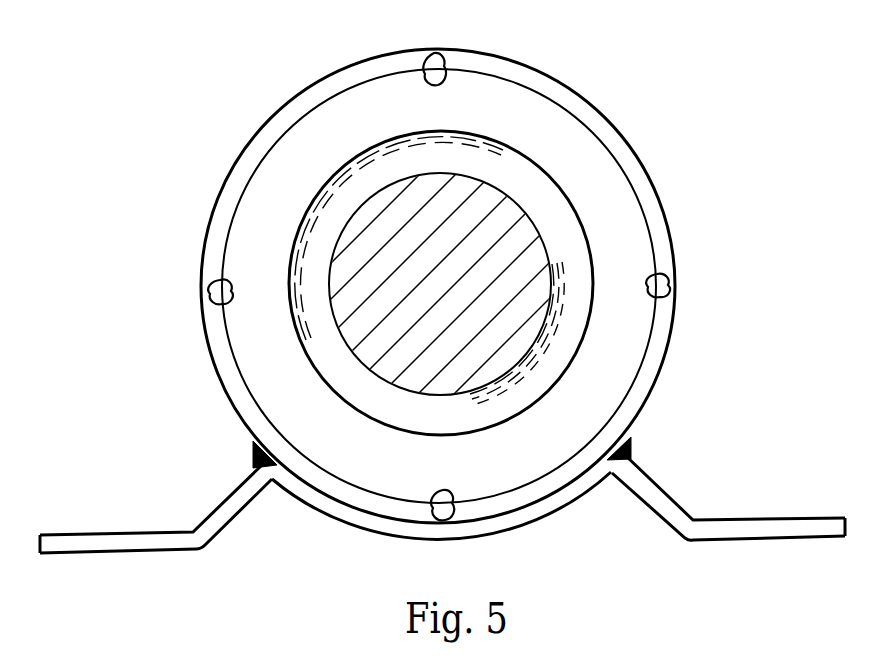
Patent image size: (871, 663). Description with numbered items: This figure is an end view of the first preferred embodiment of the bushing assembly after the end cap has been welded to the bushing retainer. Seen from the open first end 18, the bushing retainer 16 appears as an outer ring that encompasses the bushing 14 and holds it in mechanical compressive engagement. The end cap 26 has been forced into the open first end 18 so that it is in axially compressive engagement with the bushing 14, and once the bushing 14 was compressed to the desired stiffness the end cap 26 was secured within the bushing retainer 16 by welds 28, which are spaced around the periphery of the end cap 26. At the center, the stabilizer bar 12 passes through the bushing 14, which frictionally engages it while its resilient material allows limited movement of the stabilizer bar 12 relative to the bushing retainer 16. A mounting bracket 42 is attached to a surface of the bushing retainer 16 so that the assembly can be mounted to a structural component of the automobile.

The stabilizer bar 12 is at (362, 322).
The bushing 14 is at (532, 197).
The bushing retainer 16 is at (648, 168).
The first end 18 is at (660, 216).
The end cap 26 is at (620, 232).
The welds 28 is at (440, 63).
The mounting bracket 42 is at (667, 512).